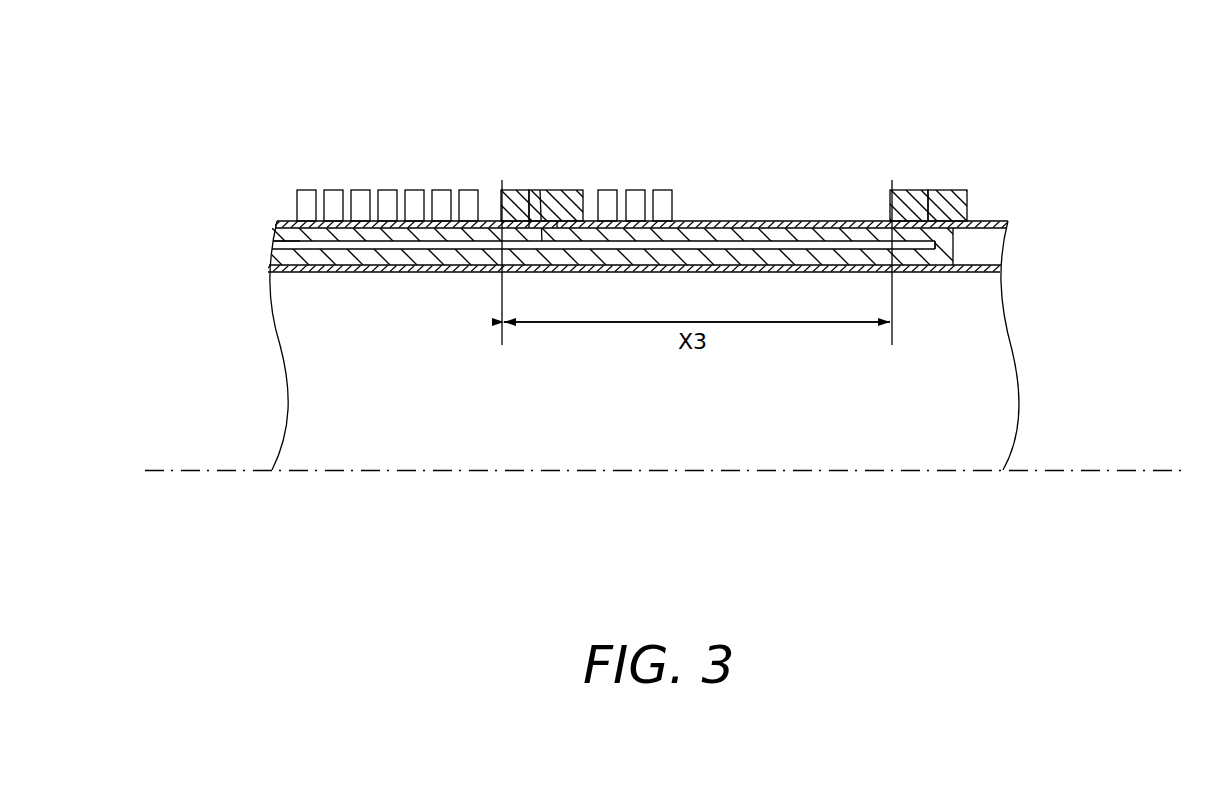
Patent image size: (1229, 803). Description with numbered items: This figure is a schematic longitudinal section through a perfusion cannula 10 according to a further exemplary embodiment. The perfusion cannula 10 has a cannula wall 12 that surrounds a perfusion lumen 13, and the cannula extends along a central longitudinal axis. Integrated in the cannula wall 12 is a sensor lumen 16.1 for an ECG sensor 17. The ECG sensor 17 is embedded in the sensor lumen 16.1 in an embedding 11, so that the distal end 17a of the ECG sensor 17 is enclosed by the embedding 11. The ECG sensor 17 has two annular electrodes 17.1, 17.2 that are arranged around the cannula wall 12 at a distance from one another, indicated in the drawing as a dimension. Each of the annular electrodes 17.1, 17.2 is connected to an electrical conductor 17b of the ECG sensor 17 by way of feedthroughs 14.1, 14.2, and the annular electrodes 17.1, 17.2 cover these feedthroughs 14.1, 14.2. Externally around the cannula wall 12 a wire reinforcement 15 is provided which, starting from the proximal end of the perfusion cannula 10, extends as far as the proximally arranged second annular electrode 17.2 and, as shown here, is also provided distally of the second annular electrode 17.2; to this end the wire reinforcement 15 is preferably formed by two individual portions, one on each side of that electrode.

The perfusion cannula 10 is at (1090, 180).
The embedding 11 is at (292, 247).
The cannula wall 12 is at (343, 277).
The perfusion lumen 13 is at (978, 365).
The feedthrough 14.1 is at (926, 190).
The feedthrough 14.2 is at (528, 190).
The wire reinforcement 15 is at (303, 190).
The sensor lumen 16.1 is at (965, 247).
The ECG sensor 17 is at (192, 471).
The distal end 17a is at (923, 266).
The electrical conductor 17b is at (278, 240).
The annular electrode 17.1 is at (957, 190).
The second annular electrode 17.2 is at (575, 190).